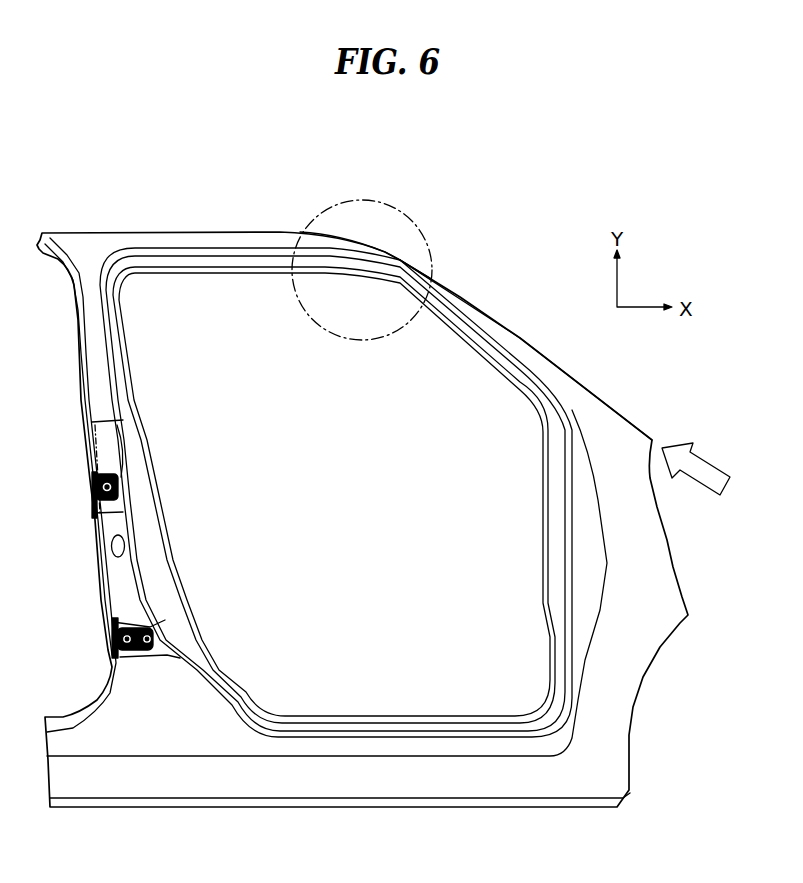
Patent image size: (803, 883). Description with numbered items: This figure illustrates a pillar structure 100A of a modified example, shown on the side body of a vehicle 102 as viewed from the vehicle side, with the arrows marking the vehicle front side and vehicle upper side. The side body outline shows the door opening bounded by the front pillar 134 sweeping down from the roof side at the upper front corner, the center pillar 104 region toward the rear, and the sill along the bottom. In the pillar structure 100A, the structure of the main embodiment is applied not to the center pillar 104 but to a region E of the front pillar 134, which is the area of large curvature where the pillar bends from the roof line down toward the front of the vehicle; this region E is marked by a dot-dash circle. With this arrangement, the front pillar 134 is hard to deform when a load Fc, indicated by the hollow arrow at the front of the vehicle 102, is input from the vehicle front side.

The vehicle 102 is at (225, 222).
The center pillar 104 is at (160, 545).
The front pillar 134 is at (492, 330).
The pillar structure 100A is at (372, 238).
The region E is at (325, 333).
The load Fc is at (711, 475).